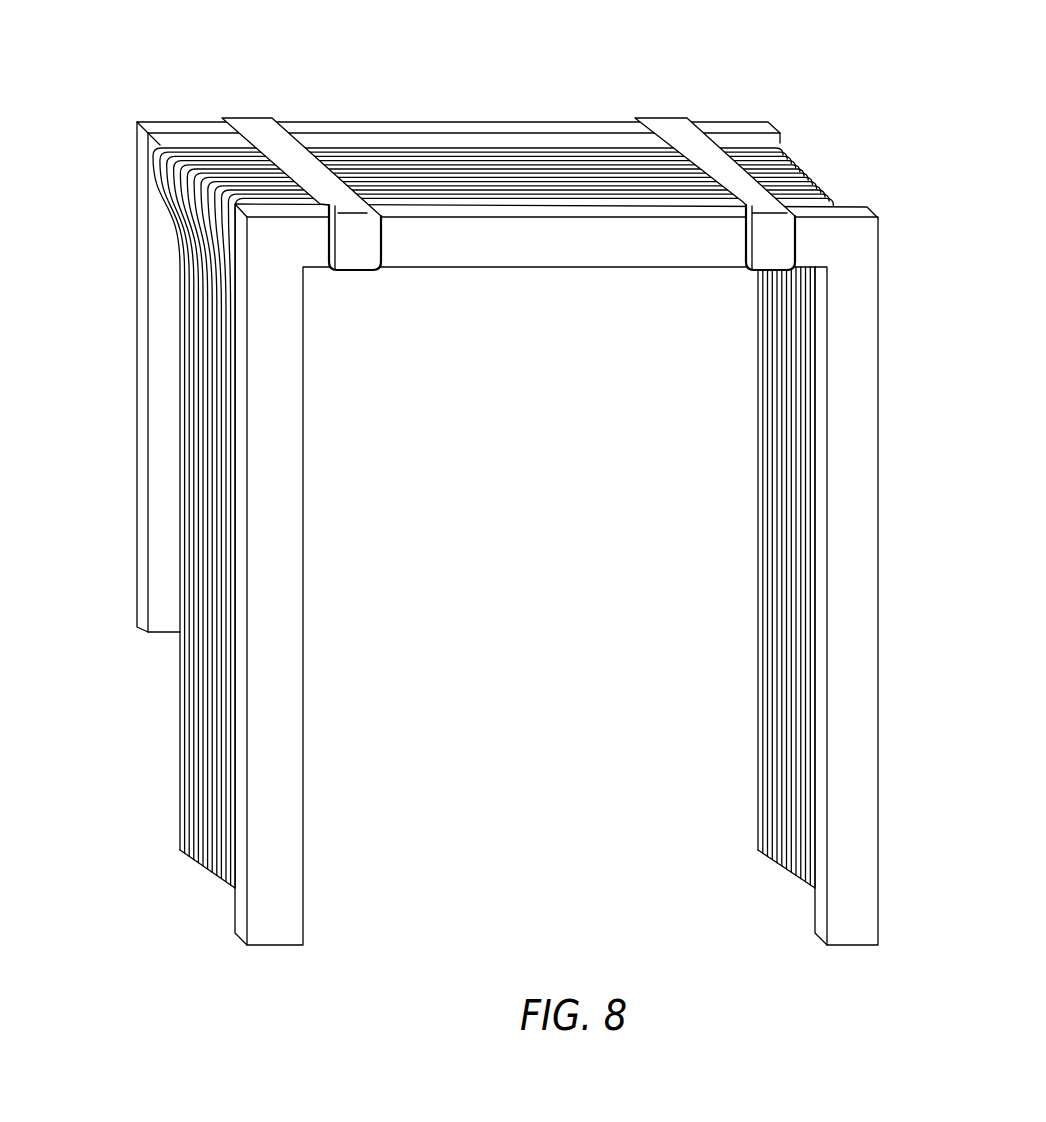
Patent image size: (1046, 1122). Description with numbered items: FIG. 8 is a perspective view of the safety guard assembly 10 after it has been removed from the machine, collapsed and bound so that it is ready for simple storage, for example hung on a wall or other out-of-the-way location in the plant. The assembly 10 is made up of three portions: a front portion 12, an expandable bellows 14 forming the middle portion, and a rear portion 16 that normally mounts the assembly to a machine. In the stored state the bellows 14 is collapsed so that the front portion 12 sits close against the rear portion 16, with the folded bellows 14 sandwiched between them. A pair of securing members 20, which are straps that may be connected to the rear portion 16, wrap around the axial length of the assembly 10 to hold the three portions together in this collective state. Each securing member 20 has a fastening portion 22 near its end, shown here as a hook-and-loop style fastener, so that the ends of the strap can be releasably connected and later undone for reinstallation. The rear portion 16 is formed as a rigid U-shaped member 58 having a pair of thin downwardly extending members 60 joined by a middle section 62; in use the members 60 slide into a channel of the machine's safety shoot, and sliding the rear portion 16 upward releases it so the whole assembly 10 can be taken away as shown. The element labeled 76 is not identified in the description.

The safety guard assembly 10 is at (502, 530).
The front portion 12 is at (853, 317).
The expandable bellows 14 is at (800, 172).
The rear portion 16 is at (463, 325).
The securing member 20 is at (257, 128).
The fastening portion 22 is at (348, 205).
The U-shaped member 58 is at (162, 557).
The downwardly extending members 60 is at (773, 140).
The middle section 62 is at (416, 138).
The plate side wall 76 is at (140, 470).